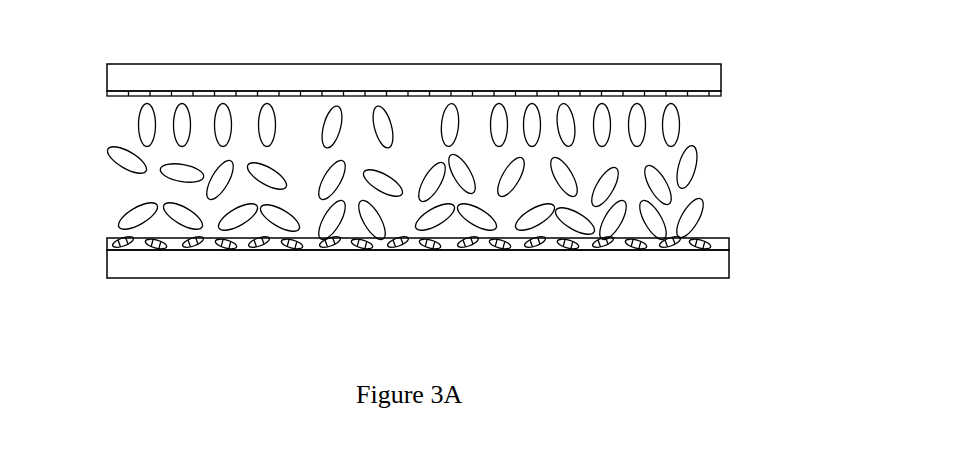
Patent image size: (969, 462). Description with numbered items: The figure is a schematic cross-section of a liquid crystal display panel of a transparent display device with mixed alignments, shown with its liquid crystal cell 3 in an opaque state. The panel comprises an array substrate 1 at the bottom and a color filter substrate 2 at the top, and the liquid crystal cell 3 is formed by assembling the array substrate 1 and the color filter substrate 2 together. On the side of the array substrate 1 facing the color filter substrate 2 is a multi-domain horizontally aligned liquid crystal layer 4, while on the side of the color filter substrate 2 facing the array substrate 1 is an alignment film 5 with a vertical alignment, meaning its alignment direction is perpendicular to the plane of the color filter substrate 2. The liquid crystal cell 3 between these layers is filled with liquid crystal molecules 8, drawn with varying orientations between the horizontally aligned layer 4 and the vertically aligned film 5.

The array substrate 1 is at (728, 267).
The color filter substrate 2 is at (721, 73).
The liquid crystal cell 3 is at (389, 173).
The multi-domain horizontally aligned liquid crystal layer 4 is at (728, 242).
The alignment film 5 is at (721, 98).
The liquid crystal molecules 8 is at (701, 200).